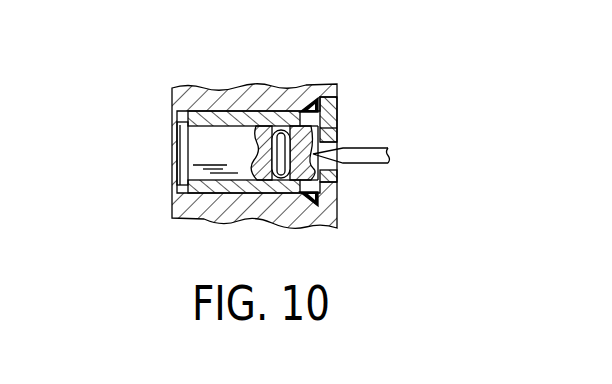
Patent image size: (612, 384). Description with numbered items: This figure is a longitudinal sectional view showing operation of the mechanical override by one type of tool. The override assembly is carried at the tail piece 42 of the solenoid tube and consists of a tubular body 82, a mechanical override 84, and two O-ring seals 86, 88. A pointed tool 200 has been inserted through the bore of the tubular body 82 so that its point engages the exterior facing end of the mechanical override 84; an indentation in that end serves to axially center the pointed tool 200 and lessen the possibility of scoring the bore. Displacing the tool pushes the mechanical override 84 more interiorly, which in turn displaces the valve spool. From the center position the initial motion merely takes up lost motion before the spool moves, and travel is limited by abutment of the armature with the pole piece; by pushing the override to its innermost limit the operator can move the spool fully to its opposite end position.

The tail piece 42 is at (293, 88).
The tubular body 82 is at (203, 113).
The mechanical override 84 is at (183, 157).
The O-ring seal 86 is at (316, 103).
The O-ring seal 88 is at (279, 128).
The pointed tool 200 is at (369, 146).